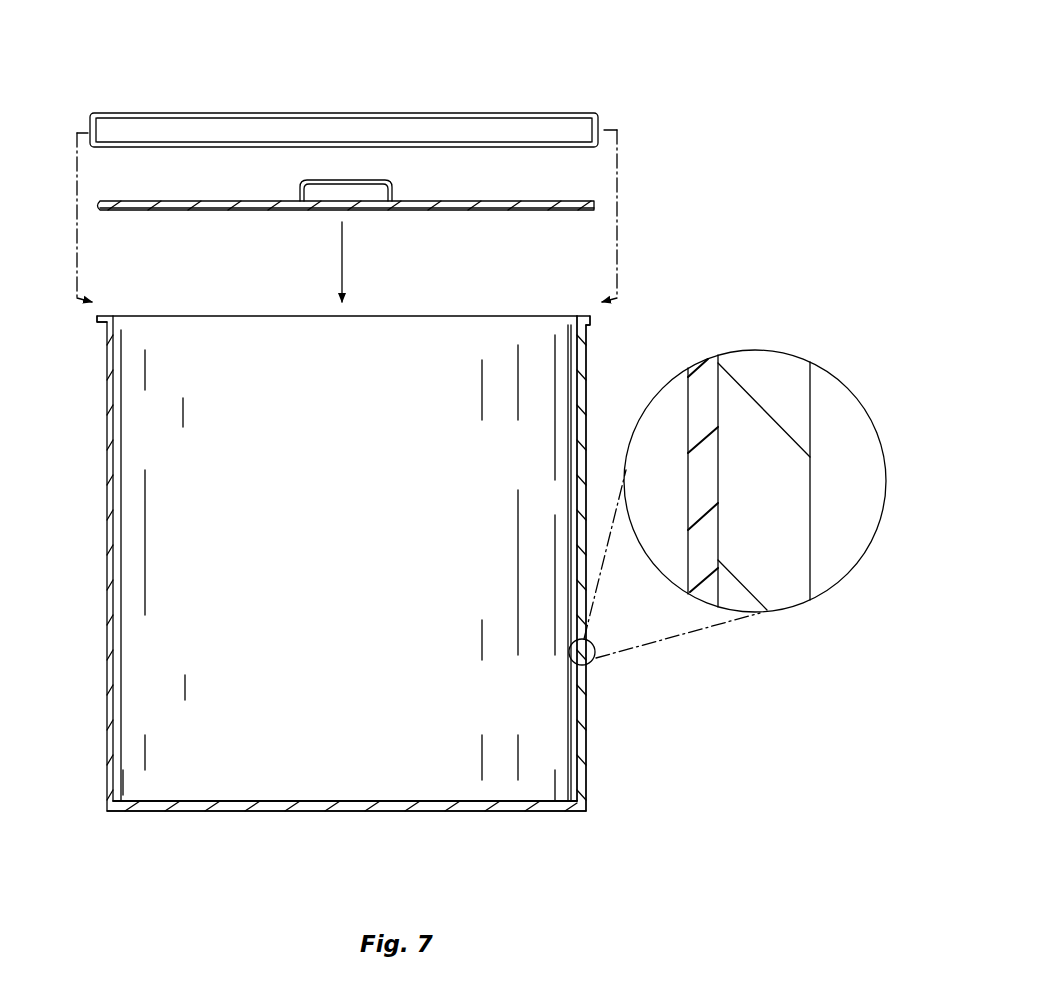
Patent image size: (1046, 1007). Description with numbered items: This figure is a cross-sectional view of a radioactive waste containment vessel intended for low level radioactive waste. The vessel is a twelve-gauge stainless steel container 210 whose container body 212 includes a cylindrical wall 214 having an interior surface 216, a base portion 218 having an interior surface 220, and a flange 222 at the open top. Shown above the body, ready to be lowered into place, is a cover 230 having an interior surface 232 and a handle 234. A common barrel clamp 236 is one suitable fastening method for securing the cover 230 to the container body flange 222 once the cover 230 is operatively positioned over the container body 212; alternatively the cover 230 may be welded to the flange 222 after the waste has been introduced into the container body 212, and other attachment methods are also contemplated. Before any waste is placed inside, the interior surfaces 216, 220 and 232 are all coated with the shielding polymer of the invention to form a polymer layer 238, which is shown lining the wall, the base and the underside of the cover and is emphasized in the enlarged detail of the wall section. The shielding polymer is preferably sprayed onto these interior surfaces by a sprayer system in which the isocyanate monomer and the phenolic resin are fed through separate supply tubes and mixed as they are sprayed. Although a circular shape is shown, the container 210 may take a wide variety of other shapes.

The container 210 is at (623, 84).
The container body 212 is at (98, 672).
The cylindrical wall 214 is at (105, 466).
The interior surface 216 is at (577, 443).
The base portion 218 is at (318, 812).
The interior surface 220 is at (282, 803).
The flange 222 is at (103, 324).
The cover 230 is at (567, 197).
The interior surface 232 is at (443, 212).
The handle 234 is at (300, 193).
The barrel clamp 236 is at (503, 112).
The polymer layer 238 is at (200, 213).